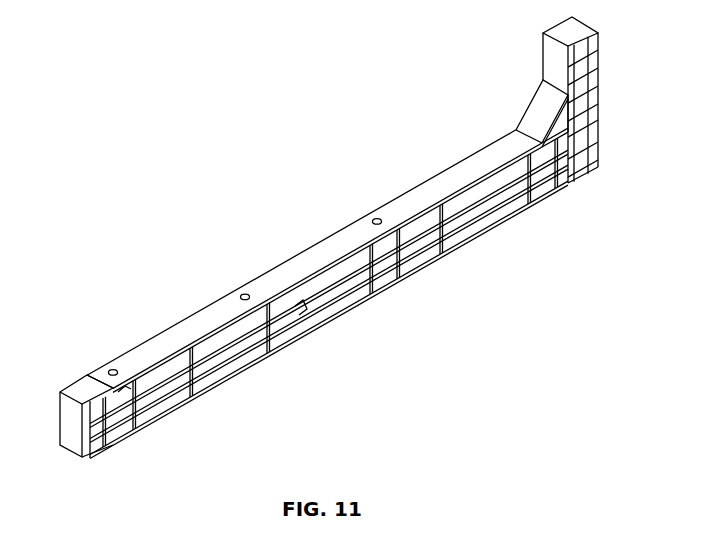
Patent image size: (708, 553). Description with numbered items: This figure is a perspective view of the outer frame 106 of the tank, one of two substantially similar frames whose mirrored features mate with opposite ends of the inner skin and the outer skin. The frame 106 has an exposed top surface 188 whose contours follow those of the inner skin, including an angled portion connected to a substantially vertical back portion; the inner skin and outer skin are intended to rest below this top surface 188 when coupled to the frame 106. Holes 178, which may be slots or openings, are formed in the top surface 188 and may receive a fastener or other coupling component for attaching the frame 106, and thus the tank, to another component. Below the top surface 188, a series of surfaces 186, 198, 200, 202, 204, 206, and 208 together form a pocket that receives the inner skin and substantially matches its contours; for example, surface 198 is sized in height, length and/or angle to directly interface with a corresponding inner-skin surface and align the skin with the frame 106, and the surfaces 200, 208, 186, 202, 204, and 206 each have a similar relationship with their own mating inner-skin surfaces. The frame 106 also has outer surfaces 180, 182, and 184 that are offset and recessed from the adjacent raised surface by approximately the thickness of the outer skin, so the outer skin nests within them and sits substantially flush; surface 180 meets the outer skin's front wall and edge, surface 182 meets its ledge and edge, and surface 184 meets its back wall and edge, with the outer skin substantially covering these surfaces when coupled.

The frame 106 is at (300, 73).
The holes 178 is at (376, 219).
The surface 180 is at (83, 422).
The surface 182 is at (333, 321).
The surface 184 is at (602, 55).
The surface 186 is at (278, 315).
The top surface 188 is at (465, 167).
The surface 198 is at (568, 75).
The surface 200 is at (553, 125).
The surface 202 is at (203, 365).
The surface 204 is at (157, 393).
The surface 206 is at (125, 387).
The surface 208 is at (332, 283).